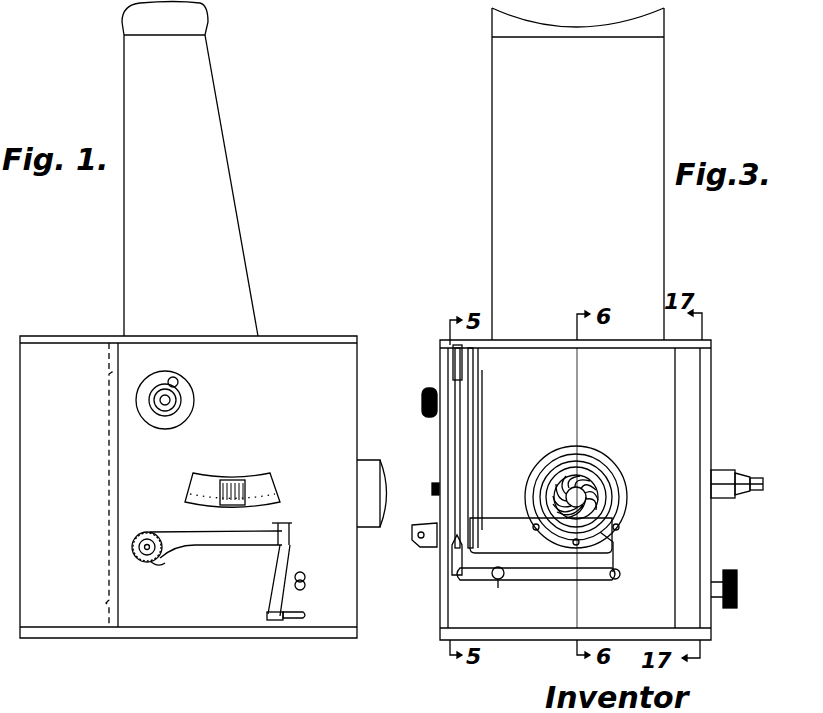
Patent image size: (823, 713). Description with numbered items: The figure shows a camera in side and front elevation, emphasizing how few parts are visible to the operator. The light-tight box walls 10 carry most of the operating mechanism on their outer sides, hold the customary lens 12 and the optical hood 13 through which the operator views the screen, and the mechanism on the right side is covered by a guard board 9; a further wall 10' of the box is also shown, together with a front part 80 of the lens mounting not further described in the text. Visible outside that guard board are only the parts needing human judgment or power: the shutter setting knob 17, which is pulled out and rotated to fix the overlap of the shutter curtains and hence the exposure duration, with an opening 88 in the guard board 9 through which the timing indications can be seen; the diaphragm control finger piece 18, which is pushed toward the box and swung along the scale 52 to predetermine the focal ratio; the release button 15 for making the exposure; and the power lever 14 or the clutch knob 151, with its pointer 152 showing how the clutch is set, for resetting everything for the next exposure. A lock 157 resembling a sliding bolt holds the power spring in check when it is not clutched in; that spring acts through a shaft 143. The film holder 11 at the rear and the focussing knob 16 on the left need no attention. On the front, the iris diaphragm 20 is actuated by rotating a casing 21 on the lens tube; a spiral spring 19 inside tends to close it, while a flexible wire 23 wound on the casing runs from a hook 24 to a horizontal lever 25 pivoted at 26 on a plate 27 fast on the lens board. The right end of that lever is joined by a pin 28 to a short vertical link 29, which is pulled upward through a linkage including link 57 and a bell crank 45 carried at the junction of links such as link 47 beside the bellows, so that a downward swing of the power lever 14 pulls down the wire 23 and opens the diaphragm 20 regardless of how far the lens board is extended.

In FIG. 1, the optical hood 13 is at (232, 268).
In FIG. 3, the optical hood 13 is at (512, 267).
In FIG. 1, the guard board 9 is at (188, 487).
In FIG. 3, the guard board 9 is at (437, 446).
In FIG. 1, the removable rear box 11 is at (66, 440).
In FIG. 1, the lens 12 is at (370, 472).
In FIG. 1, the opening in guard board 88 is at (196, 402).
In FIG. 1, the shutter setting knob 17 is at (180, 386).
In FIG. 3, the shutter setting knob 17 is at (422, 404).
In FIG. 1, the camera box walls 10 is at (249, 480).
In FIG. 3, the camera box walls 10 is at (428, 637).
In FIG. 3, the side wall 10' is at (602, 489).
In FIG. 1, the diaphragm control finger piece 18 is at (236, 480).
In FIG. 3, the diaphragm control finger piece 18 is at (432, 489).
In FIG. 1, the scale 52 is at (272, 505).
In FIG. 1, the power lever 14 is at (221, 565).
In FIG. 1, the clutch knob 151 is at (143, 565).
In FIG. 1, the pointer 152 is at (162, 562).
In FIG. 1, the release button 15 is at (306, 573).
In FIG. 1, the lock 157 is at (293, 614).
In FIG. 3, the lock 157 is at (400, 640).
In FIG. 3, the bell crank 45 is at (453, 362).
In FIG. 3, the link 47 is at (474, 461).
In FIG. 3, the link 57 is at (452, 511).
In FIG. 3, the lens mount 80 is at (571, 464).
In FIG. 3, the hook 24 is at (560, 478).
In FIG. 3, the diaphragm 20 is at (583, 478).
In FIG. 3, the spiral spring 19 is at (590, 489).
In FIG. 3, the casing 21 is at (599, 502).
In FIG. 3, the plate 27 is at (509, 532).
In FIG. 3, the flexible wire 23 is at (612, 562).
In FIG. 3, the horizontal lever 25 is at (599, 580).
In FIG. 3, the pivot 26 is at (500, 581).
In FIG. 3, the vertical link 29 is at (452, 564).
In FIG. 3, the pin 28 is at (452, 580).
In FIG. 3, the shaft 143 is at (726, 470).
In FIG. 3, the focussing knob 16 is at (725, 572).